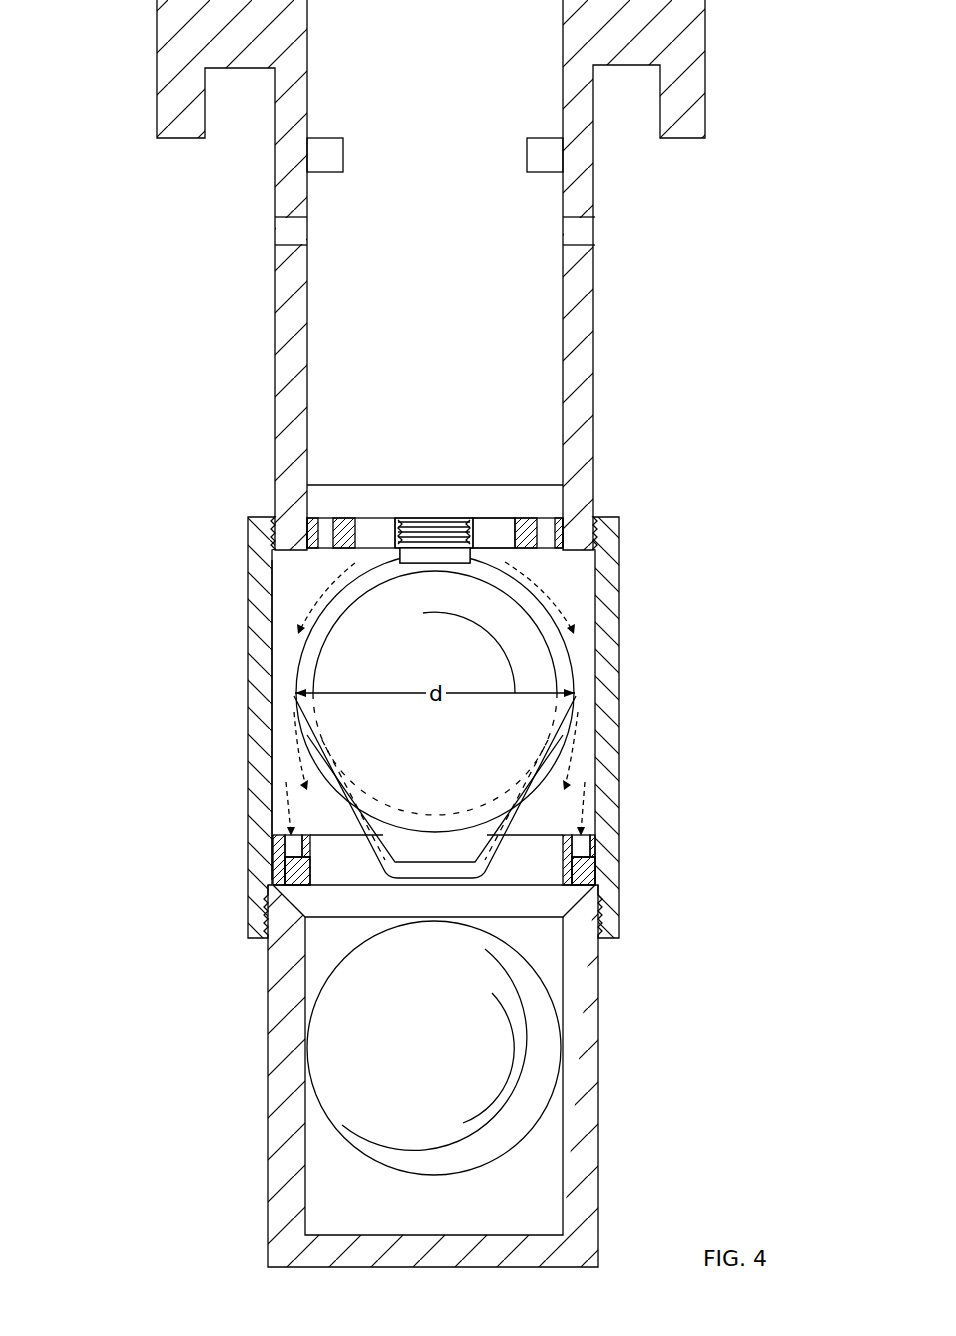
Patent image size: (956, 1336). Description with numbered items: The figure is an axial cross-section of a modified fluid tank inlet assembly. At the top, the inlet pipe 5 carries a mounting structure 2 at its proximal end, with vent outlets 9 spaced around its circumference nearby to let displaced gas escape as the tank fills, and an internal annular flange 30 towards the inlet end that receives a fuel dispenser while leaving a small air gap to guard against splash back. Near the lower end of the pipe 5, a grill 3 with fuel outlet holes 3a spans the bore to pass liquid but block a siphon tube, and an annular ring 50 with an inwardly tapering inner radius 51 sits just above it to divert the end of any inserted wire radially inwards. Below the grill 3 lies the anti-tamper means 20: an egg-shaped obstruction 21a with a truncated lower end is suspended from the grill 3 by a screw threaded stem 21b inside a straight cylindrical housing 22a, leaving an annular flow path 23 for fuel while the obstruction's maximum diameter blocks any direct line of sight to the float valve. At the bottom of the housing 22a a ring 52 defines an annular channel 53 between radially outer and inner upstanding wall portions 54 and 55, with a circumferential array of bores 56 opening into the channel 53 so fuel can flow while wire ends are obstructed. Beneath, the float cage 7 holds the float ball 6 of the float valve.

The mounting structure 2 is at (385, 275).
The grill 3 is at (528, 552).
The fuel outlet holes 3a is at (492, 533).
The inlet pipe 5 is at (273, 352).
The float ball 6 is at (535, 1073).
The float cage 7 is at (290, 1128).
The vent outlets 9 is at (583, 231).
The anti-tamper means 20 is at (441, 727).
The obstruction 21a is at (513, 795).
The screw threaded stem 21b is at (428, 535).
The housing 22a is at (248, 757).
The annular flow path 23 is at (237, 690).
The internal annular flange 30 is at (338, 150).
The annular ring 50 is at (352, 532).
The inwardly tapering inner radius 51 is at (540, 505).
The ring 52 is at (596, 878).
The annular channel 53 is at (252, 883).
The outer upstanding circumferential wall portion 54 is at (597, 852).
The inner upstanding circumferential wall portion 55 is at (550, 840).
The bores 56 is at (313, 870).